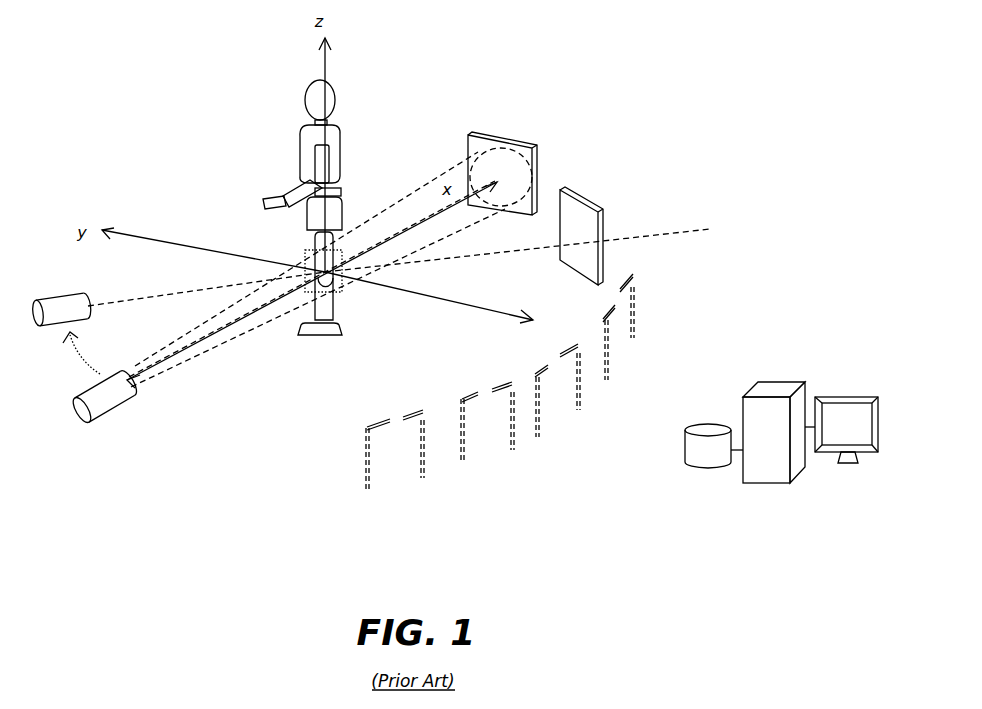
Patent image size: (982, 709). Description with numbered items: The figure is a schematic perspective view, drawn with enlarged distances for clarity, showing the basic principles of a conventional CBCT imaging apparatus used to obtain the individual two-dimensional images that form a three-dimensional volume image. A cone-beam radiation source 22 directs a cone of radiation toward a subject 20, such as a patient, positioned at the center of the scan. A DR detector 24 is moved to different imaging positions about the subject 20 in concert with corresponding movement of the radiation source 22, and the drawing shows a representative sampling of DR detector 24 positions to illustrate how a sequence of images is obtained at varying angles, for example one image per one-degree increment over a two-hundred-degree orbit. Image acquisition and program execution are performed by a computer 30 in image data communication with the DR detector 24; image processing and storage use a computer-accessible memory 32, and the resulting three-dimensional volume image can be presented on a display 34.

The subject 20 is at (336, 282).
The cone-beam radiation source 22 is at (102, 418).
The DR detector 24 is at (510, 142).
The computer 30 is at (754, 456).
The computer-accessible memory 32 is at (696, 461).
The display 34 is at (835, 432).